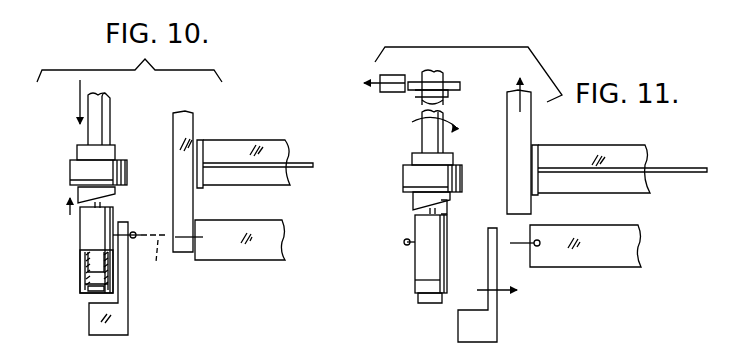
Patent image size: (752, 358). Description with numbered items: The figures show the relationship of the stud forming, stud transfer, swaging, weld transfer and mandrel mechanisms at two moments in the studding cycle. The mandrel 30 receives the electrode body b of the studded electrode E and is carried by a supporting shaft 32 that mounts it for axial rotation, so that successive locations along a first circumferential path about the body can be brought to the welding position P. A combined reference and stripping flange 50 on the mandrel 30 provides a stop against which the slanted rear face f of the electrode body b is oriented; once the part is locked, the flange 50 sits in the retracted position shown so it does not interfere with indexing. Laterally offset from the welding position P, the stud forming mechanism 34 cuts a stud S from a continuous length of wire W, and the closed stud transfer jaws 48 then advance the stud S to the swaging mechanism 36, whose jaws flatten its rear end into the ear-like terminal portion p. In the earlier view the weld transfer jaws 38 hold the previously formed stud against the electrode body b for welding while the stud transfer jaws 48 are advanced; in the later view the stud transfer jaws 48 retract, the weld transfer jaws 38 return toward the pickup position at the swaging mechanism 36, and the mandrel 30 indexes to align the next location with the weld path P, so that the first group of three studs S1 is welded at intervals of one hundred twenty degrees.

In FIG. 10, the mandrel 30 is at (80, 256).
In FIG. 11, the mandrel 30 is at (446, 212).
In FIG. 10, the supporting shaft 32 is at (110, 122).
In FIG. 11, the supporting shaft 32 is at (428, 133).
In FIG. 10, the stud forming mechanism 34 is at (251, 135).
In FIG. 11, the stud forming mechanism 34 is at (656, 136).
In FIG. 10, the swaging mechanism 36 is at (280, 236).
In FIG. 11, the swaging mechanism 36 is at (615, 258).
In FIG. 10, the weld transfer jaws 38 is at (121, 324).
In FIG. 11, the weld transfer jaws 38 is at (490, 331).
In FIG. 10, the stud transfer jaws 48 is at (190, 123).
In FIG. 11, the stud transfer jaws 48 is at (524, 134).
In FIG. 10, the combined reference and stripping flange 50 is at (86, 186).
In FIG. 11, the combined reference and stripping flange 50 is at (415, 200).
In FIG. 10, the wire W is at (311, 163).
In FIG. 11, the wire W is at (702, 170).
In FIG. 10, the stud S is at (204, 234).
In FIG. 11, the stud S is at (522, 246).
In FIG. 10, the first group of studs S1 is at (139, 231).
In FIG. 11, the first group of studs S1 is at (406, 239).
In FIG. 10, the welding position P is at (154, 255).
In FIG. 10, the studded electrode E is at (80, 280).
In FIG. 11, the studded electrode E is at (420, 283).
In FIG. 10, the rear face f is at (85, 208).
In FIG. 11, the rear face f is at (415, 208).
In FIG. 11, the electrode body b is at (418, 265).
In FIG. 11, the terminal portion p is at (540, 240).